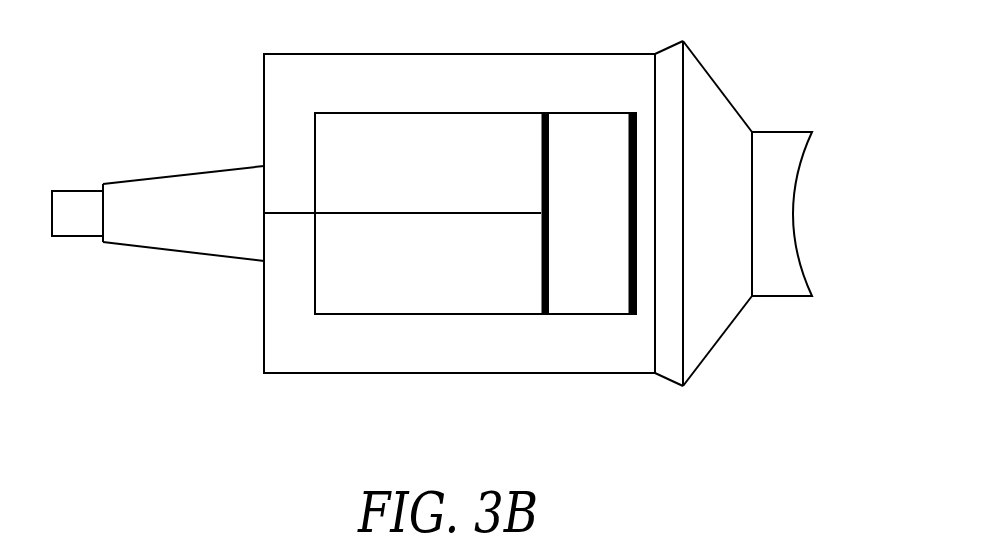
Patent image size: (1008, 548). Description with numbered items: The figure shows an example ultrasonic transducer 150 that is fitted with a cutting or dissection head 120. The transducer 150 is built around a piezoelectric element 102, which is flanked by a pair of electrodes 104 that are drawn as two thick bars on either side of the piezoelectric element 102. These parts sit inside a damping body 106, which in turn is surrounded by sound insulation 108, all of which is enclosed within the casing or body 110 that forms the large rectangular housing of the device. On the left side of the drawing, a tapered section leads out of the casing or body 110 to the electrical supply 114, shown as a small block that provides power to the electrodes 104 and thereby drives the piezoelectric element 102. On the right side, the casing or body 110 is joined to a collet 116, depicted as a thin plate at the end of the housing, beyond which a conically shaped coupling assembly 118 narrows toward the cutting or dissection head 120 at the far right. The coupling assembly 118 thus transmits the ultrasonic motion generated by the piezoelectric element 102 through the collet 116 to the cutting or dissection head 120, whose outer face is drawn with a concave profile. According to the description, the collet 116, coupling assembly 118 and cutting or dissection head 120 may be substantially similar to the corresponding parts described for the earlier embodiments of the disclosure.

The transducer 150 is at (166, 68).
The piezoelectric element 102 is at (587, 296).
The electrodes 104 is at (545, 113).
The damping body 106 is at (347, 127).
The sound insulation 108 is at (277, 339).
The casing or body 110 is at (457, 374).
The electrical supply 114 is at (77, 238).
The collet 116 is at (671, 388).
The coupling assembly 118 is at (720, 340).
The cutting or dissection head 120 is at (783, 131).